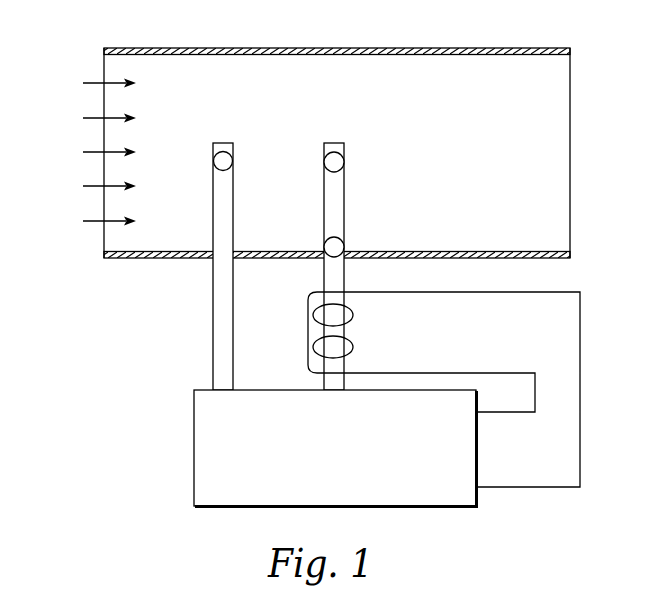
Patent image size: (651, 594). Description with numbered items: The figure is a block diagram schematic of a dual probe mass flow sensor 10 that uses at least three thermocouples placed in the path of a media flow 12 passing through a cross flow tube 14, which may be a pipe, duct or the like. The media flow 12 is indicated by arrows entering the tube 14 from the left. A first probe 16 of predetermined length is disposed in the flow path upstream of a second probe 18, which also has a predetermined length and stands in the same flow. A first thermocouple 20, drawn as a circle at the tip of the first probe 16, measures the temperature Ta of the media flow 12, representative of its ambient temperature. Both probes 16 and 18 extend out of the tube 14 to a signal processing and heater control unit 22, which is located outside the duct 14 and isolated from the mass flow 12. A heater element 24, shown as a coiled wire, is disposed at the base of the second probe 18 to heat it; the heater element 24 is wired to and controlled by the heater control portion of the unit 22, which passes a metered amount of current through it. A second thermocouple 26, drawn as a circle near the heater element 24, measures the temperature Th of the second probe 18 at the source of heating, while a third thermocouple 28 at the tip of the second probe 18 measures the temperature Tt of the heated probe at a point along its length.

The dual probe mass flow sensor 10 is at (181, 346).
The media flow 12 is at (75, 94).
The cross flow tube 14 is at (494, 83).
The first probe 16 is at (222, 254).
The second probe 18 is at (331, 254).
The first thermocouple 20 is at (230, 159).
The signal processing and heater control unit 22 is at (194, 455).
The heater element 24 is at (353, 343).
The second thermocouple 26 is at (341, 245).
The third thermocouple 28 is at (341, 160).